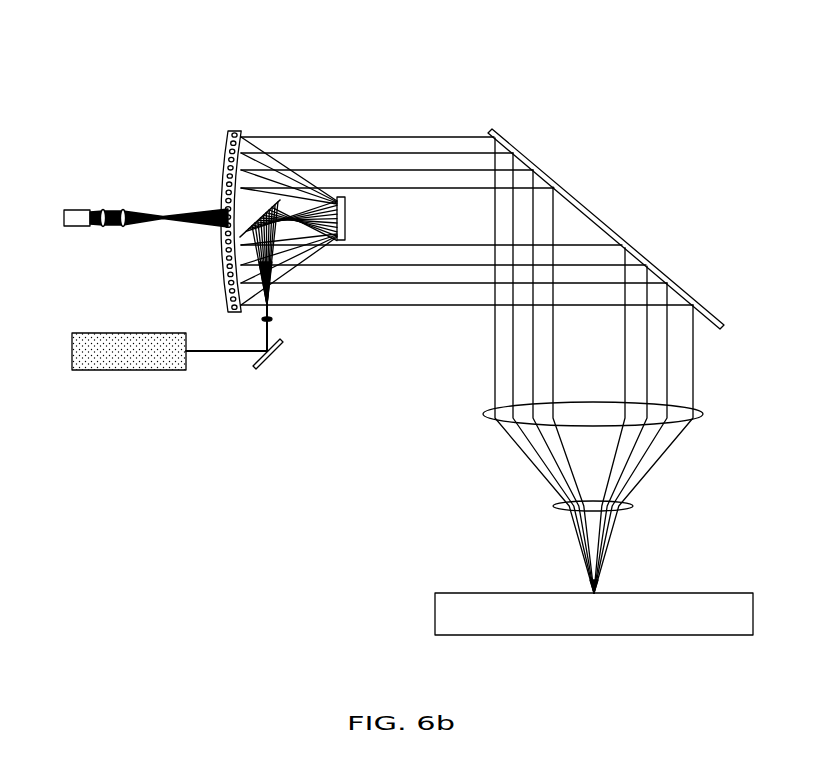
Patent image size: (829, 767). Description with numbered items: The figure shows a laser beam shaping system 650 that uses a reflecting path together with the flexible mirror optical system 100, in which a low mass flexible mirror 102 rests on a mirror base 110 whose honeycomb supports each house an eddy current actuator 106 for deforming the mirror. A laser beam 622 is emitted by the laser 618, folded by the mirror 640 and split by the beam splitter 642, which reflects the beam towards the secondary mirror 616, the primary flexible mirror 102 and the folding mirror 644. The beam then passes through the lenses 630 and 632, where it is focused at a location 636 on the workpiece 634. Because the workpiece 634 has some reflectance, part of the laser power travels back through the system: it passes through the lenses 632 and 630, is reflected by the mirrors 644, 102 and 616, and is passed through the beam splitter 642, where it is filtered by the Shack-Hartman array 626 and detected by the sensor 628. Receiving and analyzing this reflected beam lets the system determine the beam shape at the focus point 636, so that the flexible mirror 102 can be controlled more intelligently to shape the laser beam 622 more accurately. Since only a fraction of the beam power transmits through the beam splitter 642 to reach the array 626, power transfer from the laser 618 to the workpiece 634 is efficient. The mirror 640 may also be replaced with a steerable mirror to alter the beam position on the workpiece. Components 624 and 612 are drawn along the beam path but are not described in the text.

The system 650 is at (345, 55).
The optical system 100 is at (204, 137).
The mirror base 110 is at (237, 127).
The flexible mirror 102 is at (242, 163).
The eddy current actuator 106 is at (227, 290).
The secondary mirror 616 is at (348, 217).
The beam splitter 642 is at (242, 238).
The sensor 628 is at (75, 230).
The Shack-Hartman array 626 is at (103, 207).
The lens 624 is at (126, 207).
The lens 612 is at (279, 323).
The mirror 640 is at (261, 377).
The laser beam 622 is at (225, 357).
The laser 618 is at (128, 331).
The folding mirror 644 is at (494, 122).
The lens 630 is at (707, 418).
The lens 632 is at (548, 508).
The workpiece 634 is at (681, 592).
The location 636 is at (591, 598).